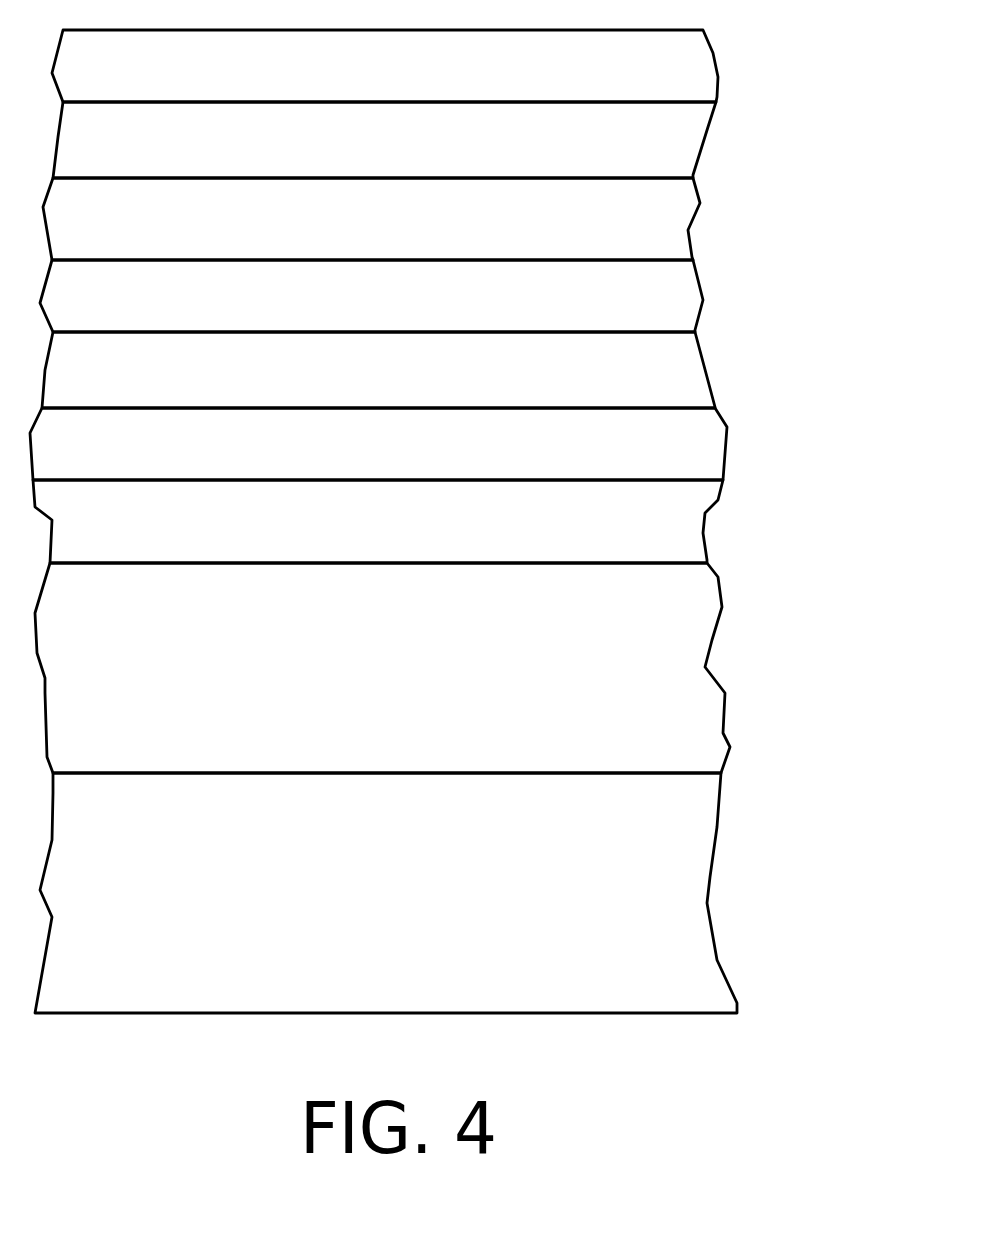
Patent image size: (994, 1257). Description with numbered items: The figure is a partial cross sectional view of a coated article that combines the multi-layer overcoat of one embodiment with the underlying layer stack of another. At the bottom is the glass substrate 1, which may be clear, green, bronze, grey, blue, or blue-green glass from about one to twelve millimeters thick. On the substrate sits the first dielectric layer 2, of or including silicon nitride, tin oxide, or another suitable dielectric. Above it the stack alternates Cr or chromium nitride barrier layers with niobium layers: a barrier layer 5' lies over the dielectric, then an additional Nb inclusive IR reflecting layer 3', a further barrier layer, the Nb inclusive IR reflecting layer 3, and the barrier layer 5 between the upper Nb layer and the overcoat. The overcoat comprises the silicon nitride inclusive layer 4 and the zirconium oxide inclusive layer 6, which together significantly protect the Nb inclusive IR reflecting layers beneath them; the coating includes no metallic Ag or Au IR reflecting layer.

The substrate 1 is at (688, 877).
The first dielectric layer 2 is at (678, 645).
The infrared (IR) reflecting layer 3 is at (435, 296).
The additional Nb inclusive IR reflecting layer 3' is at (435, 444).
The second dielectric layer 4 is at (692, 133).
The barrier layer 5 is at (438, 219).
The additional barrier layer 5' is at (440, 525).
The zirconium oxide inclusive layer 6 is at (695, 58).